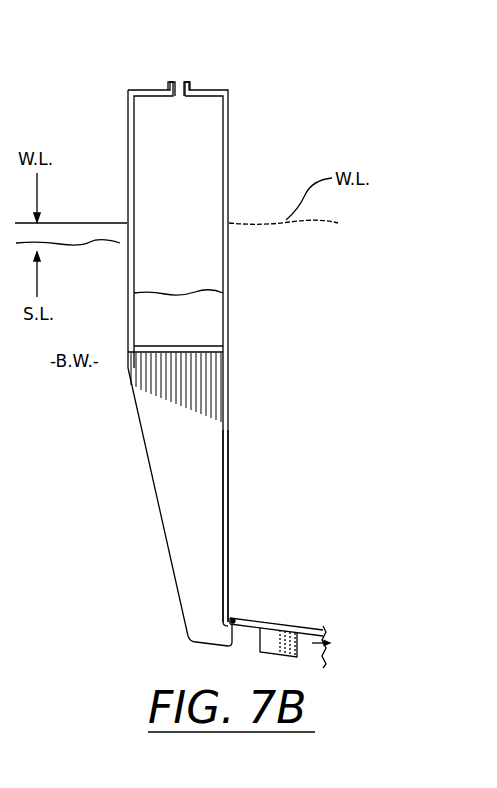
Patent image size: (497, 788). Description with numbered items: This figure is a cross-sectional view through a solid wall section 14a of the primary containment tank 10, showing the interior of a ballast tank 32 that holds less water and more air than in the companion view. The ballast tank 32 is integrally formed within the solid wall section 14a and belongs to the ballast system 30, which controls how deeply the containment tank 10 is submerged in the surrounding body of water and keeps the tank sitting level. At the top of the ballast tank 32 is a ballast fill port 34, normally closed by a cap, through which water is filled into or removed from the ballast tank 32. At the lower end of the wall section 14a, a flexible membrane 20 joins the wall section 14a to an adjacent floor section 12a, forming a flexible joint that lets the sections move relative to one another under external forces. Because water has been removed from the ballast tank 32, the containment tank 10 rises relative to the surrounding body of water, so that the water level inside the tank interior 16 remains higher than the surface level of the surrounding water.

The primary containment tank 10 is at (192, 78).
The floor section 12a is at (302, 628).
The solid wall section 14a is at (228, 440).
The tank interior 16 is at (316, 283).
The flexible membrane 20 is at (252, 618).
The ballast system 30 is at (228, 97).
The ballast tank 32 is at (200, 132).
The ballast fill port 34 is at (168, 82).